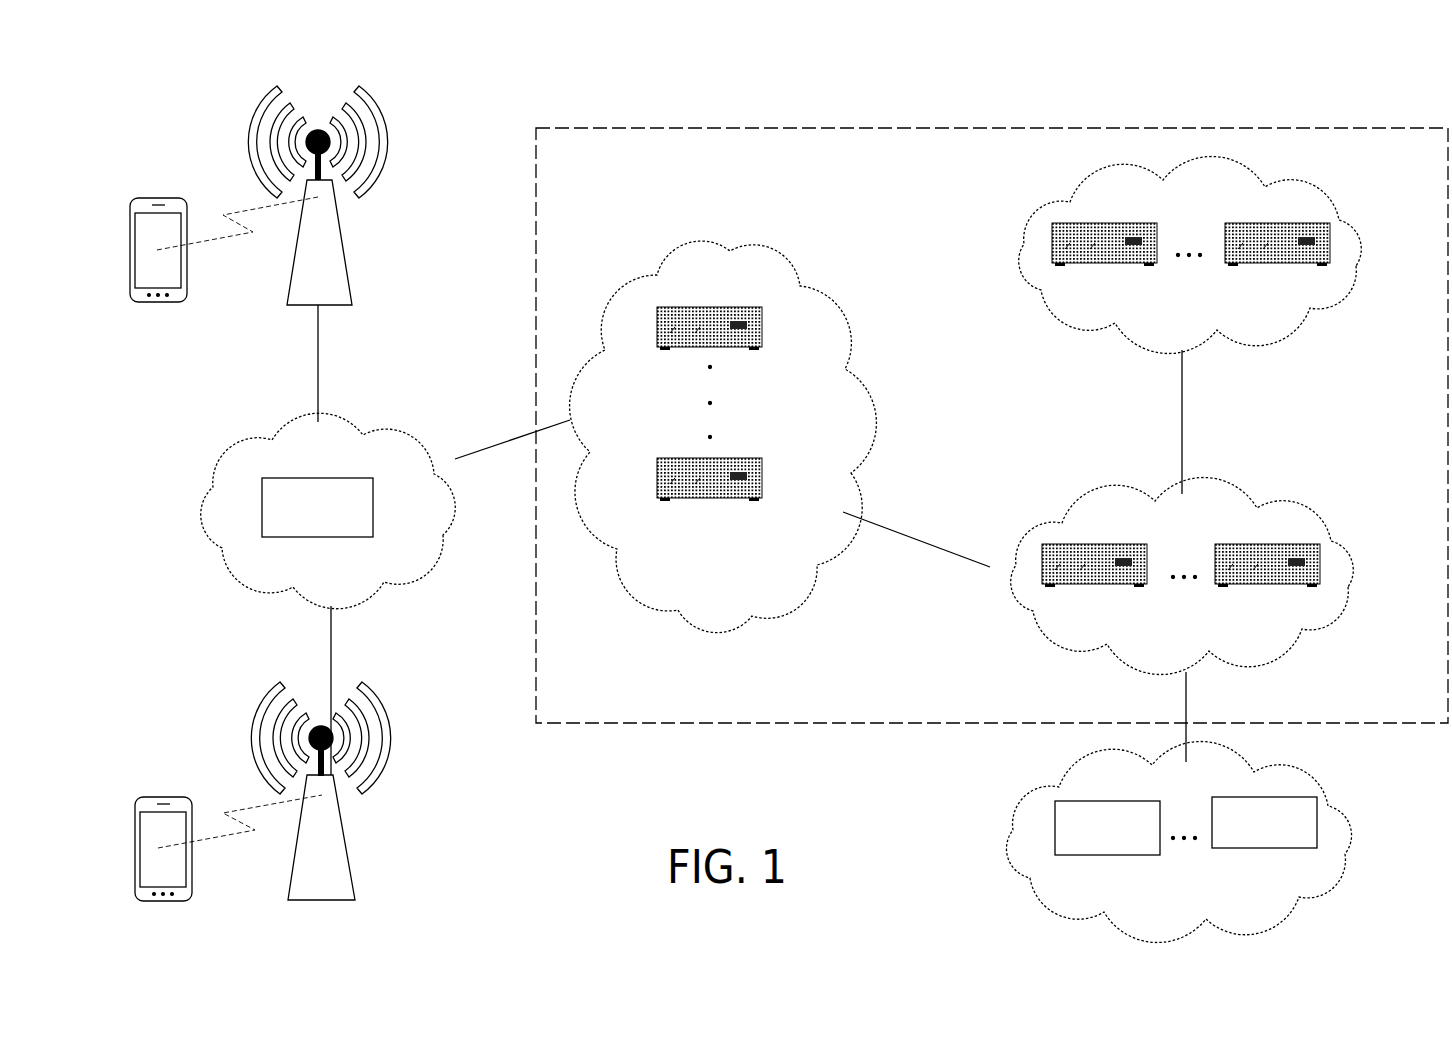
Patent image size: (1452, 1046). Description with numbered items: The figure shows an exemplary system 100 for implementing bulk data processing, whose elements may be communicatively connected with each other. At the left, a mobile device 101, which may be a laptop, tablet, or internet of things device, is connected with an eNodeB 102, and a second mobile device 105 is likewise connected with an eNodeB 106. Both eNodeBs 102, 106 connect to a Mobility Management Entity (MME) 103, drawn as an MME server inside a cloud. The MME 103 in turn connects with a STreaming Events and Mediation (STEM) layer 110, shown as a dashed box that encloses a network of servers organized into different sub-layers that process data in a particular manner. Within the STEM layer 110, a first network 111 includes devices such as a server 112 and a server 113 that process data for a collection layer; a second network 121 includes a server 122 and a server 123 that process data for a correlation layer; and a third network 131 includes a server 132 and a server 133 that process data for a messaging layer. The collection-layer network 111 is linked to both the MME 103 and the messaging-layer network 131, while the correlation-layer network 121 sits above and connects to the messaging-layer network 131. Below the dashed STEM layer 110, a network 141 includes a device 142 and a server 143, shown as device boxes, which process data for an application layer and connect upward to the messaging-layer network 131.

The system 100 is at (1325, 94).
The mobile device 101 is at (157, 198).
The eNodeB 102 is at (345, 243).
The Mobility Management Entity (MME) 103 is at (373, 518).
The mobile device 105 is at (182, 797).
The eNodeB 106 is at (343, 837).
The STreaming Events and Mediation (STEM) layer 110 is at (535, 133).
The network 111 is at (755, 225).
The server 112 is at (762, 327).
The server 113 is at (762, 473).
The network 121 is at (1068, 181).
The server 122 is at (1110, 264).
The server 123 is at (1297, 223).
The network 131 is at (1058, 501).
The server 132 is at (1092, 586).
The server 133 is at (1277, 544).
The network 141 is at (1058, 768).
The device 142 is at (1097, 856).
The server 143 is at (1283, 798).